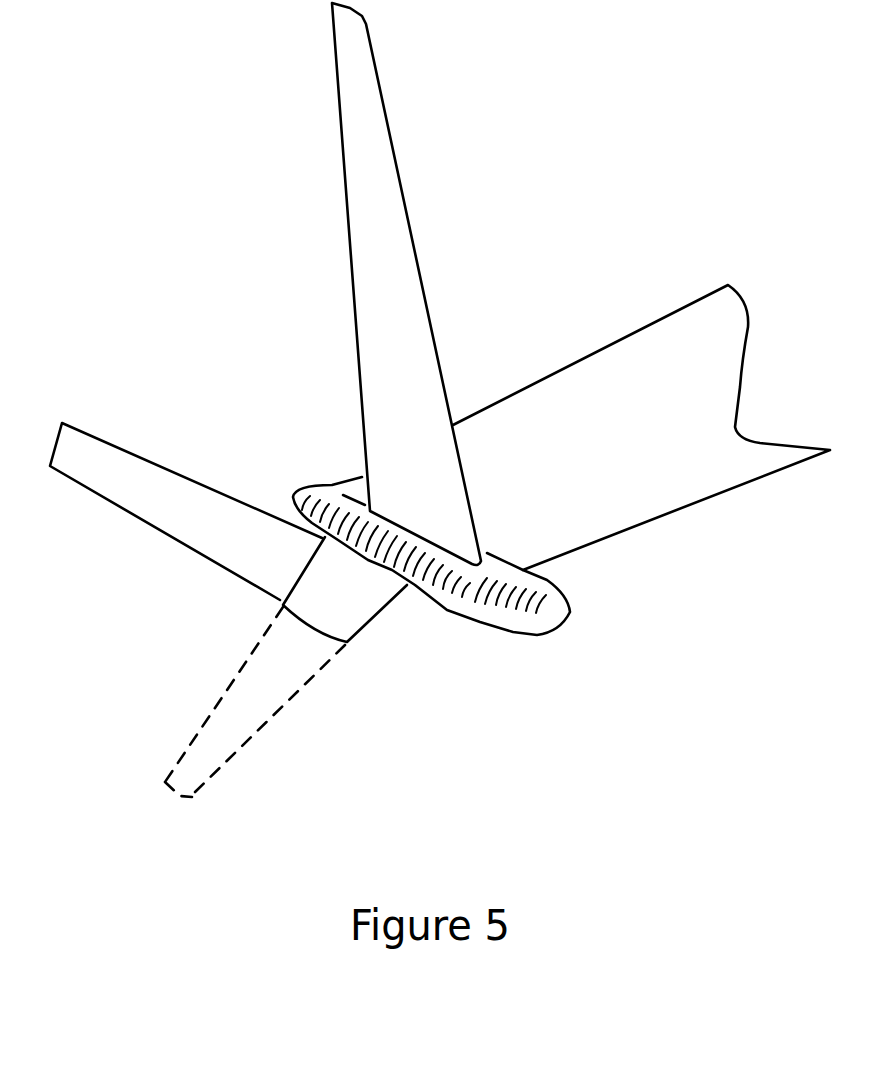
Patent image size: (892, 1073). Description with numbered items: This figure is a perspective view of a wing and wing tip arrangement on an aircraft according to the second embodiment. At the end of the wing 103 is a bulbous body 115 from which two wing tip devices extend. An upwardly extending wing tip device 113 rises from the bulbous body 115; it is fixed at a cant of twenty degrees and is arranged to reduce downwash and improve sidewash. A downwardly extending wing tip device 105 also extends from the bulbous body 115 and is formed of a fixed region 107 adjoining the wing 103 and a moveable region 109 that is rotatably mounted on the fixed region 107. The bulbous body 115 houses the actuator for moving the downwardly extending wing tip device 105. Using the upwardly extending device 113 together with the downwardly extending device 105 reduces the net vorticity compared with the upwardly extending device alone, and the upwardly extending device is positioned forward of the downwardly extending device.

The wing 103 is at (602, 370).
The downwardly extending wing tip device 105 is at (174, 600).
The fixed region 107 is at (350, 612).
The moveable region 109 is at (121, 485).
The upwardly extending wing tip device 113 is at (360, 265).
The bulbous body 115 is at (545, 614).